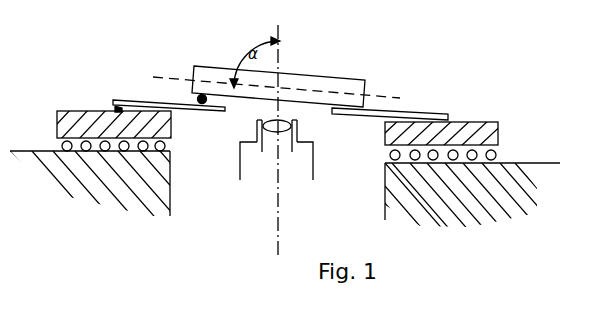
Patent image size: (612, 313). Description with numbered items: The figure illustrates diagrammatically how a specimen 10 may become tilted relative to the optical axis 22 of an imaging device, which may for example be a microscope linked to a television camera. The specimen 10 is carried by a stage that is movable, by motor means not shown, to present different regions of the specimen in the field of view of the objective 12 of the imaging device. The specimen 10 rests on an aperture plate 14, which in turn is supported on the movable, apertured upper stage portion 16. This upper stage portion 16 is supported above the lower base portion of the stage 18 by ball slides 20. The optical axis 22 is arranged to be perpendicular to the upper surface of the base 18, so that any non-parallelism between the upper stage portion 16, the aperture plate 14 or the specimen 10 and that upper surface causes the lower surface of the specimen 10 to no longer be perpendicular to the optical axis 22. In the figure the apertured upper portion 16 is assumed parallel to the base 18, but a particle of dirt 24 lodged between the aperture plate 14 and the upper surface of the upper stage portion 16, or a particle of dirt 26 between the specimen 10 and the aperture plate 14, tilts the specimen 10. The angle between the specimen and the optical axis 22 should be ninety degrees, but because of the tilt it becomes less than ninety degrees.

The specimen 10 is at (333, 77).
The objective 12 is at (314, 146).
The aperture plate 14 is at (417, 112).
The upper stage portion 16 is at (477, 122).
The lower base portion of the stage 18 is at (543, 163).
The ball slides 20 is at (63, 145).
The optical axis 22 is at (279, 204).
The particle of dirt 24 is at (115, 108).
The particle of dirt 26 is at (200, 96).